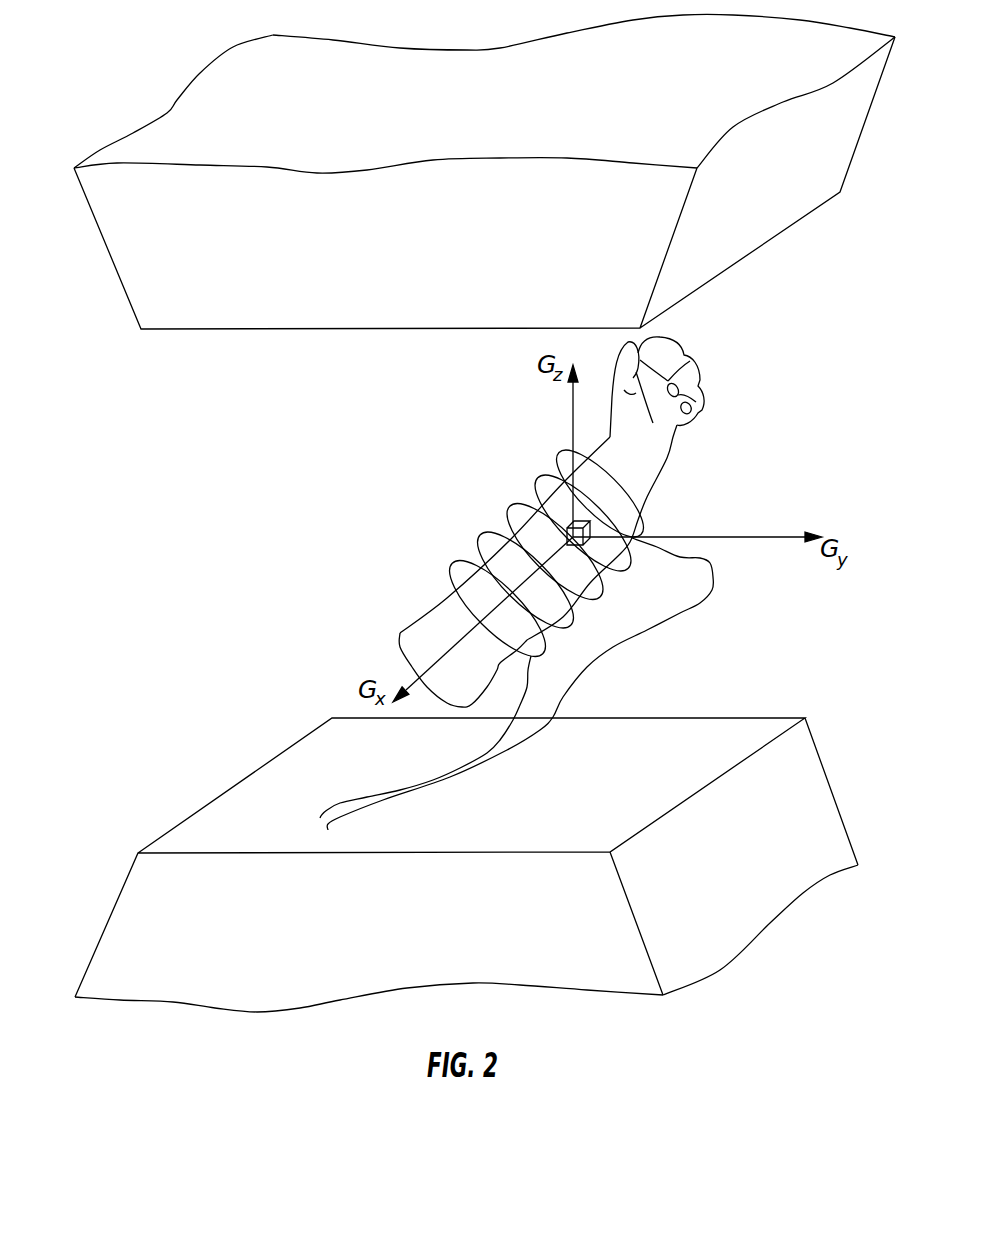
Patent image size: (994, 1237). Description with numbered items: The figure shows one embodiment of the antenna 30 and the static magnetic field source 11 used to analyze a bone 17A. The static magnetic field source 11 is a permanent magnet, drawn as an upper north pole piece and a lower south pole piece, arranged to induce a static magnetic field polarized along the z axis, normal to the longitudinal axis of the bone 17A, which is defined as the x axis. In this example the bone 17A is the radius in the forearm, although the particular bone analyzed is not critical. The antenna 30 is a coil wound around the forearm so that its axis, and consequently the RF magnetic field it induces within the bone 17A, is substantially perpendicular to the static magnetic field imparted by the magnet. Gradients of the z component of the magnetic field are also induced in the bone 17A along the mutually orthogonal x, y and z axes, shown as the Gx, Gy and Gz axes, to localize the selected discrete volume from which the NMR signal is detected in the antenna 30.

The static magnetic field source 11 is at (112, 265).
The bone 17A is at (682, 444).
The antenna 30 is at (481, 524).